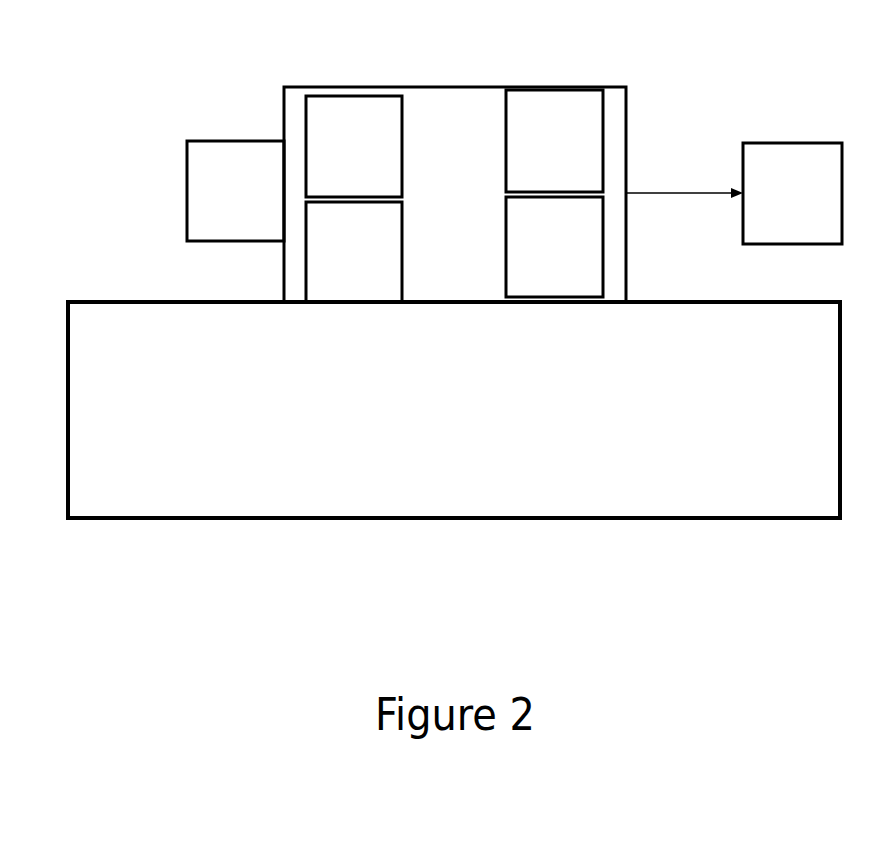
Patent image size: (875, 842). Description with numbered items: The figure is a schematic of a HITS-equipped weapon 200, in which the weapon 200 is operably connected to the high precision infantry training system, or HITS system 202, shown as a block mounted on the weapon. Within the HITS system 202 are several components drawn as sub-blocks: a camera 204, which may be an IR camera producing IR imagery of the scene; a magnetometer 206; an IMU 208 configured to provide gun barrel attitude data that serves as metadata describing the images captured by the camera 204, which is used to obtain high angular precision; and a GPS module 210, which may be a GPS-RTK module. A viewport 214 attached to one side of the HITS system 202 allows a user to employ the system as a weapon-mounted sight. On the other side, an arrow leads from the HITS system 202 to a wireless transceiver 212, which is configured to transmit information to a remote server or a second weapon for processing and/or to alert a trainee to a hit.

The HITS-equipped weapon 200 is at (454, 410).
The HITS system 202 is at (455, 194).
The camera 204 is at (354, 146).
The magnetometer 206 is at (554, 141).
The IMU 208 is at (354, 252).
The GPS module 210 is at (554, 247).
The wireless transceiver 212 is at (734, 193).
The viewport 214 is at (235, 191).